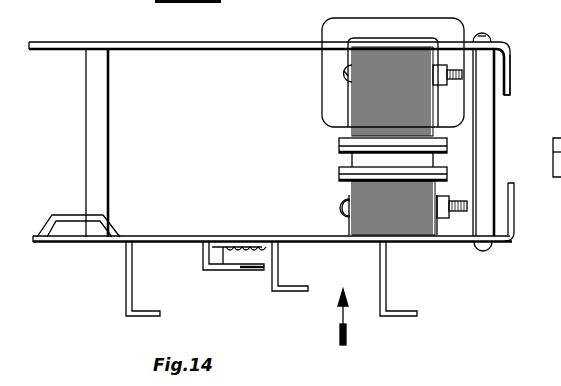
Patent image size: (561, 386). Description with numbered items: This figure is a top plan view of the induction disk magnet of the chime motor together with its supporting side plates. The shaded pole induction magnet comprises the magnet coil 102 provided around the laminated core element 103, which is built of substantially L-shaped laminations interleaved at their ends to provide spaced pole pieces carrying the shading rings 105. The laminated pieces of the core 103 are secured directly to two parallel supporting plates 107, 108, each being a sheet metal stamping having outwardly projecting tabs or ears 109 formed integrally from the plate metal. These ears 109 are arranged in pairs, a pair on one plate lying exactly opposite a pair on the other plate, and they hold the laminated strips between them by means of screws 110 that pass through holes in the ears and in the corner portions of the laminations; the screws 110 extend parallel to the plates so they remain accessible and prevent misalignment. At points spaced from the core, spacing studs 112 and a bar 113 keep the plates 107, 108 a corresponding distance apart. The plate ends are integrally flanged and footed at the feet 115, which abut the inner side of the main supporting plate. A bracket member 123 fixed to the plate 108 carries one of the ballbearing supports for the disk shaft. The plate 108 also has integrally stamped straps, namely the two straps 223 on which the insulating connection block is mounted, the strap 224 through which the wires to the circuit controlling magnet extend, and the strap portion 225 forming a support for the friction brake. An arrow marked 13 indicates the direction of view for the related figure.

The supporting plate 107 is at (273, 44).
The supporting plate 108 is at (299, 238).
The spacing stud 112 is at (104, 93).
The bar 113 is at (490, 124).
The feet 115 is at (511, 72).
The magnet coil 102 is at (334, 108).
The laminated core element 103 is at (368, 192).
The shading rings 105 is at (447, 148).
The tabs or ears 109 is at (352, 58).
The screws 110 is at (345, 213).
The strap 224 is at (112, 229).
The outwardly projecting straps 223 is at (133, 286).
The strap portion 225 is at (224, 270).
The bracket member 123 is at (284, 292).
The direction of view 13 is at (334, 317).